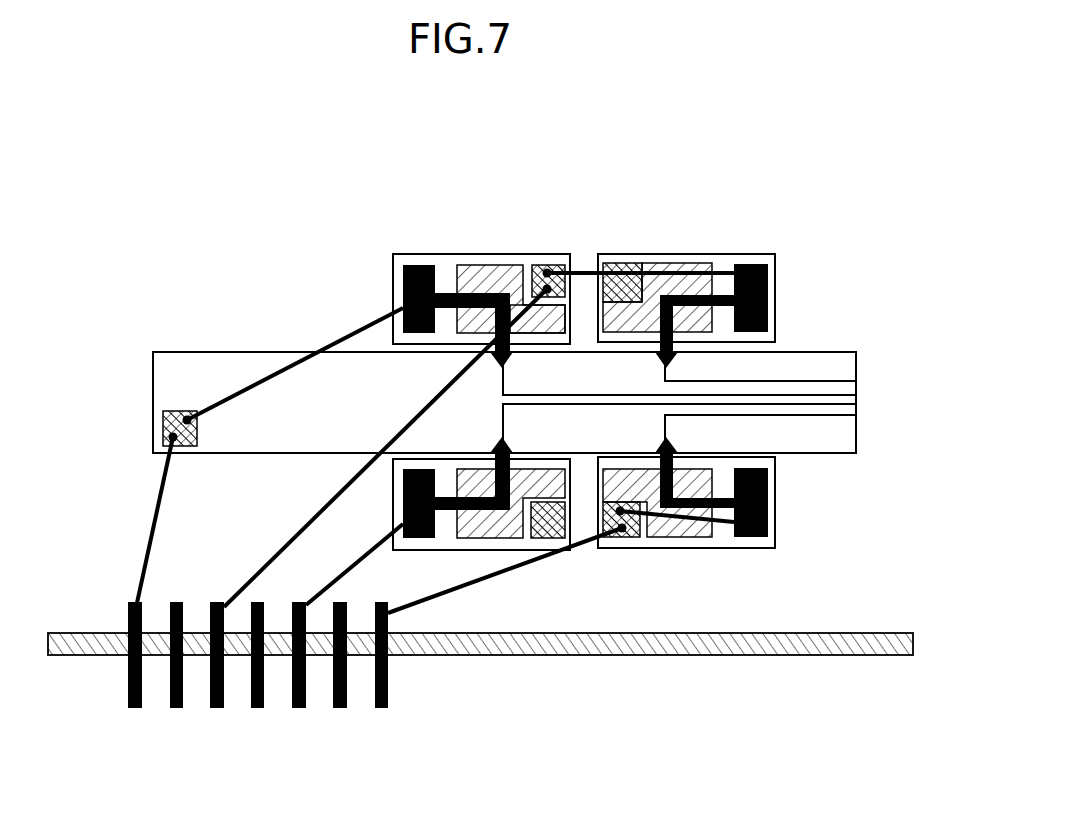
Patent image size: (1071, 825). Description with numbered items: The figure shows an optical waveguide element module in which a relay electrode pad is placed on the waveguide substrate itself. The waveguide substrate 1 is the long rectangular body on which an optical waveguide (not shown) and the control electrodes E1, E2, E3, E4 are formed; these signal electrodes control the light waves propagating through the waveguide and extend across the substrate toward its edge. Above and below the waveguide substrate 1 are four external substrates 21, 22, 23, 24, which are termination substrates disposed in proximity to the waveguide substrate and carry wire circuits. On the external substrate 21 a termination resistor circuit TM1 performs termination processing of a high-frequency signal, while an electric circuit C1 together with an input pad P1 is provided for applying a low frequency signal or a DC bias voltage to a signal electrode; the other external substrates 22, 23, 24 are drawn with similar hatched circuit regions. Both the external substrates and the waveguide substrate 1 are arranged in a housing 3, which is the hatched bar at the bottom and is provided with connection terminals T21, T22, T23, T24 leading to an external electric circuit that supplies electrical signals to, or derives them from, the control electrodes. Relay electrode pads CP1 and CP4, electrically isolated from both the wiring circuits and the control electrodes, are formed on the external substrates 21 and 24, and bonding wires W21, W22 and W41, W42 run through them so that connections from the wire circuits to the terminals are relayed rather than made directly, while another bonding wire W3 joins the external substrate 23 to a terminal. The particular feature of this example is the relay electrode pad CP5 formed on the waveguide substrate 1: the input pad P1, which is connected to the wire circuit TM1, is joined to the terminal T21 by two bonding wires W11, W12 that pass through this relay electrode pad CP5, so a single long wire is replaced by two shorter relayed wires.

The waveguide substrate 1 is at (208, 380).
The housing 3 is at (633, 640).
The external substrate 21 is at (450, 282).
The external substrate 22 is at (738, 252).
The external substrate 23 is at (480, 550).
The external substrate 24 is at (682, 527).
The input pad P1 is at (402, 275).
The termination resistor circuit TM1 is at (485, 265).
The relay electrode pad CP1 is at (555, 263).
The relay electrode pad CP4 is at (618, 537).
The relay electrode pad CP5 is at (162, 417).
The electric circuit C1 is at (448, 312).
The control electrode E1 is at (679, 380).
The control electrode E2 is at (760, 366).
The control electrode E3 is at (679, 422).
The control electrode E4 is at (760, 428).
The bonding wire W11 is at (171, 520).
The bonding wire W12 is at (295, 364).
The bonding wire W21 is at (385, 448).
The bonding wire W22 is at (668, 267).
The bonding wire W3 is at (354, 564).
The bonding wire W41 is at (505, 570).
The bonding wire W42 is at (655, 520).
The connection terminal T21 is at (128, 692).
The connection terminal T22 is at (212, 700).
The connection terminal T23 is at (307, 707).
The connection terminal T24 is at (388, 707).